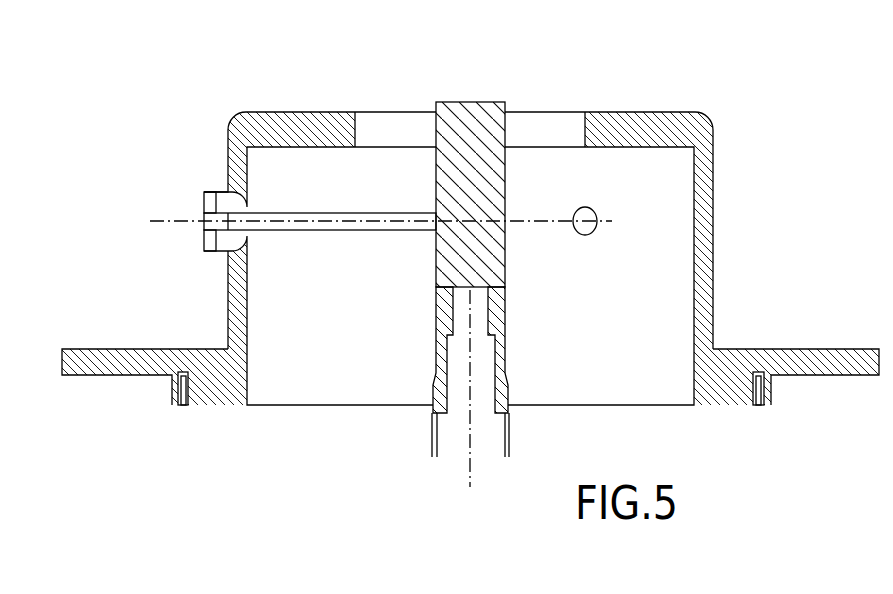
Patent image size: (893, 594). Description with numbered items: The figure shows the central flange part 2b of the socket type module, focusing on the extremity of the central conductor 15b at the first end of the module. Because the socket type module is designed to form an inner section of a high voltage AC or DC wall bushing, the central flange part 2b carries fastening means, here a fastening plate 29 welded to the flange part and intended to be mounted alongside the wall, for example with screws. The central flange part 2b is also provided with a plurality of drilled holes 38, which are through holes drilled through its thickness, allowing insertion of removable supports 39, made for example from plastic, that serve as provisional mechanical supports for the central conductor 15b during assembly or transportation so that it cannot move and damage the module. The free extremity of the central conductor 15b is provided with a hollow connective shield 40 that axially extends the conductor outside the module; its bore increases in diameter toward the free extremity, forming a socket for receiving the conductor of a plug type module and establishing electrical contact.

The central flange part 2b is at (237, 114).
The central conductor 15b is at (460, 137).
The fastening plate 29 is at (110, 360).
The drilled holes 38 is at (577, 212).
The removable supports 39 is at (291, 219).
The hollow connective shield 40 is at (440, 400).